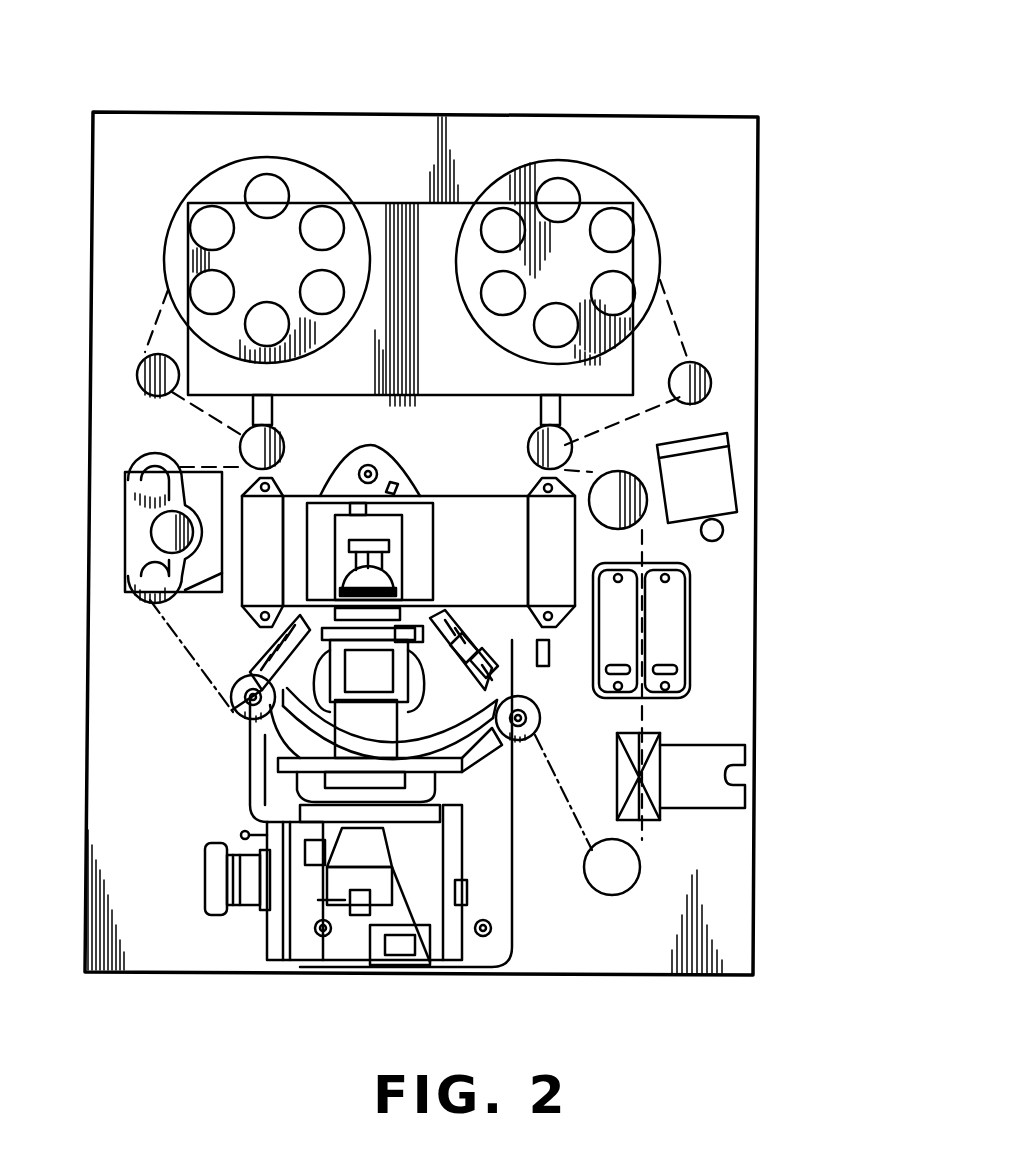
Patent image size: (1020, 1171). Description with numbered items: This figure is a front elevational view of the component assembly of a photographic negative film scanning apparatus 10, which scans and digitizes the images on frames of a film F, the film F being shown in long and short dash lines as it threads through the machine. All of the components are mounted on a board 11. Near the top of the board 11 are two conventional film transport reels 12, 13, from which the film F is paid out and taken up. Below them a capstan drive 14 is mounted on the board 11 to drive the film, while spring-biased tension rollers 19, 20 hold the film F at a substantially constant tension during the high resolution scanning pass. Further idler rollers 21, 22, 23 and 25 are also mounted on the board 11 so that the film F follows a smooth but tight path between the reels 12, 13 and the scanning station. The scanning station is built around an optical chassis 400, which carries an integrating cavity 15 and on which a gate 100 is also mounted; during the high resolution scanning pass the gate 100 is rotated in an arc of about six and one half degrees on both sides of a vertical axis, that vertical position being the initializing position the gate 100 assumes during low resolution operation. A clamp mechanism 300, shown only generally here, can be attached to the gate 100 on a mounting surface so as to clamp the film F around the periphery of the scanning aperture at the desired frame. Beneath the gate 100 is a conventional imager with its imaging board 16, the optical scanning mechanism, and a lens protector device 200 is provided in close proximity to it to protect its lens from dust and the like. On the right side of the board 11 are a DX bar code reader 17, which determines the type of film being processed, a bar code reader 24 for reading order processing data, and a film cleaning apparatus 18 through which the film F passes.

The photographic negative film scanning apparatus 10 is at (636, 74).
The board 11 is at (162, 142).
The film transport reel 12 is at (638, 222).
The film transport reel 13 is at (178, 250).
The capstan drive 14 is at (112, 548).
The integrating cavity 15 is at (430, 640).
The imager with imaging board 16 is at (262, 935).
The DX bar code reader 17 is at (662, 814).
The film cleaning apparatus 18 is at (690, 645).
The spring-biased tension roller 19 is at (243, 446).
The spring-biased tension roller 20 is at (566, 450).
The idler roller 21 is at (625, 872).
The idler roller 22 is at (618, 517).
The idler roller 23 is at (140, 383).
The bar code reader 24 is at (730, 507).
The idler roller 25 is at (705, 385).
The gate 100 is at (282, 722).
The lens protector device 200 is at (468, 790).
The clamp mechanism 300 is at (305, 788).
The optical chassis 400 is at (412, 463).
The film F is at (186, 674).